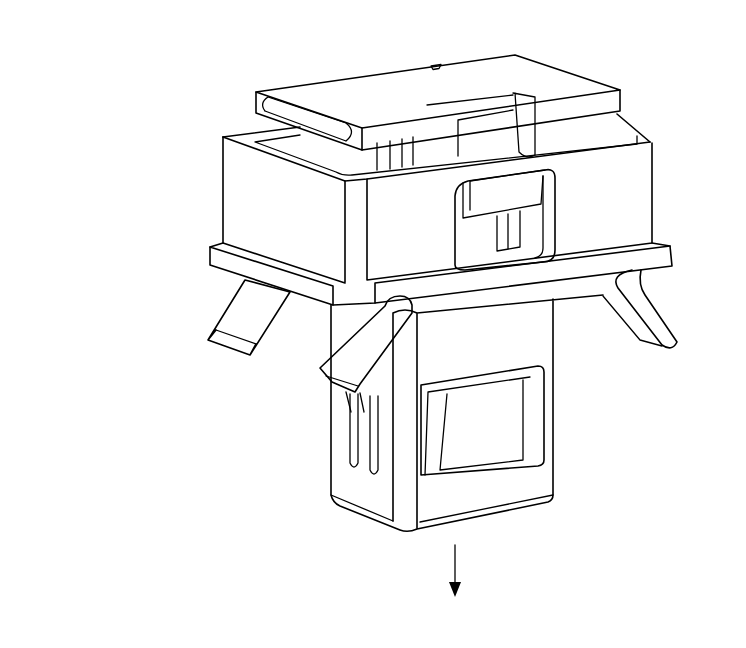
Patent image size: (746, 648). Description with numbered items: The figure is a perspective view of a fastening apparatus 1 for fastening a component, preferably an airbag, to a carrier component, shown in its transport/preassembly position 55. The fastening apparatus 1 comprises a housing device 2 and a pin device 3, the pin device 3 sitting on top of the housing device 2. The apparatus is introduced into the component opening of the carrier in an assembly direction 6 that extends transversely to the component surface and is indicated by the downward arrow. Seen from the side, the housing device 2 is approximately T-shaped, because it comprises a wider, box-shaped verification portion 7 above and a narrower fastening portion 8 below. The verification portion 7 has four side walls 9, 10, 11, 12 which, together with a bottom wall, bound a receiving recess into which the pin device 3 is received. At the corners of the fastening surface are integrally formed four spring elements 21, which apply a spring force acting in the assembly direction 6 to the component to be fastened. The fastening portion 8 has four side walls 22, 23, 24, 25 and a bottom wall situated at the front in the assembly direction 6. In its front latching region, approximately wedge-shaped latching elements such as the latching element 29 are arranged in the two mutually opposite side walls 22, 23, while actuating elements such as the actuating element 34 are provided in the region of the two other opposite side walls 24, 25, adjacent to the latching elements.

The fastening apparatus 1 is at (628, 44).
The housing device 2 is at (640, 187).
The pin device 3 is at (342, 100).
The assembly direction 6 is at (457, 566).
The verification portion 7 is at (210, 191).
The fastening portion 8 is at (572, 374).
The side wall 9 is at (250, 222).
The side wall 10 is at (622, 210).
The side wall 11 is at (646, 120).
The side wall 12 is at (216, 152).
The spring element 21 is at (236, 326).
The side wall 22 is at (362, 496).
The side wall 23 is at (516, 488).
The side wall 24 is at (572, 459).
The side wall 25 is at (315, 407).
The latching element 29 is at (506, 428).
The actuating element 34 is at (355, 414).
The transport/preassembly position 55 is at (130, 162).